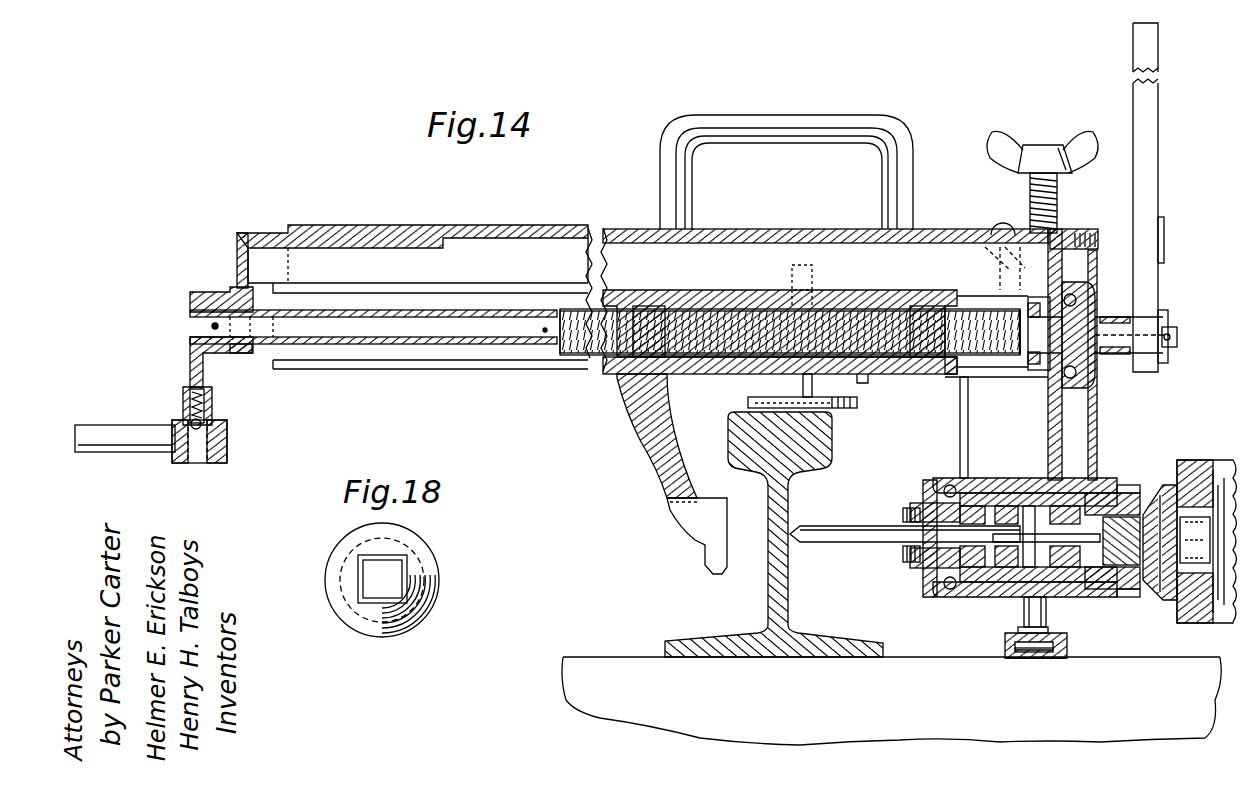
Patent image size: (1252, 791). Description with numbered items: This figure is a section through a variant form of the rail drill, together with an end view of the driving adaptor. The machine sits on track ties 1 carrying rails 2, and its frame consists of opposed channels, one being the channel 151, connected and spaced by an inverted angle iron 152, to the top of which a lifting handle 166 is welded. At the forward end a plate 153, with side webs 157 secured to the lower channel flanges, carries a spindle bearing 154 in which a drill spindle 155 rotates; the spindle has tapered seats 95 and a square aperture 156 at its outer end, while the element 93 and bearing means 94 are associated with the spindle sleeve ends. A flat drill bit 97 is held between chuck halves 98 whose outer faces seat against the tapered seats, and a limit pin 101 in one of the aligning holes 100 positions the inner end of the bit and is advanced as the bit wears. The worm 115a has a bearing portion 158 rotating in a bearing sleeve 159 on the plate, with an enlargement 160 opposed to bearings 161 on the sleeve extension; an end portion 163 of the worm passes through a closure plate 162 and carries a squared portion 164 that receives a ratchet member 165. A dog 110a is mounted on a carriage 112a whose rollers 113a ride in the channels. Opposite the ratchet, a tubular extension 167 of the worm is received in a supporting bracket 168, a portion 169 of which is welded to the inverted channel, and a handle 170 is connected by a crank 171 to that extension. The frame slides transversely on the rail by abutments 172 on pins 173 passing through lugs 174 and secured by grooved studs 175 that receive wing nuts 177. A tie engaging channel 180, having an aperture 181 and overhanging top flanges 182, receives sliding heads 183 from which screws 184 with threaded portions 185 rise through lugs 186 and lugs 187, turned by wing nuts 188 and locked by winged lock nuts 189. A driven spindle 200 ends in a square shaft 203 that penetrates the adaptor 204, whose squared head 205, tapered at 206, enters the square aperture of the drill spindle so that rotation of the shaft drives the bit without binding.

In FIG. 14, the track ties 1 is at (585, 662).
In FIG. 14, the rails 2 is at (833, 450).
In FIG. 14, the end cap 93 is at (945, 595).
In FIG. 14, the bearing means 94 is at (1110, 595).
In FIG. 14, the tapered seats 95 is at (912, 568).
In FIG. 14, the flat drill bit 97 is at (840, 530).
In FIG. 14, the chuck halves 98 is at (905, 553).
In FIG. 14, the aligning holes 100 is at (975, 538).
In FIG. 14, the limit pin 101 is at (1016, 580).
In FIG. 14, the dog 110a is at (650, 462).
In FIG. 14, the carriage 112a is at (716, 374).
In FIG. 14, the rollers 113a is at (938, 290).
In FIG. 14, the worm 115a is at (733, 320).
In FIG. 14, the channel 151 is at (462, 369).
In FIG. 14, the inverted angle iron 152 is at (615, 230).
In FIG. 14, the plate 153 is at (1050, 440).
In FIG. 14, the spindle bearing 154 is at (948, 482).
In FIG. 14, the drill spindle 155 is at (1135, 505).
In FIG. 14, the square aperture 156 is at (1140, 515).
In FIG. 14, the side webs 157 is at (962, 418).
In FIG. 14, the bearing portion 158 is at (1040, 372).
In FIG. 14, the bearing sleeve 159 is at (1035, 300).
In FIG. 14, the enlargement 160 is at (1088, 312).
In FIG. 14, the bearings 161 is at (1075, 295).
In FIG. 14, the closure plate 162 is at (1098, 420).
In FIG. 14, the end portion of the worm 163 is at (1112, 358).
In FIG. 14, the squared portion 164 is at (1177, 338).
In FIG. 14, the ratchet member 165 is at (1148, 118).
In FIG. 14, the lifting handle 166 is at (768, 125).
In FIG. 14, the tubular extension 167 is at (372, 344).
In FIG. 14, the supporting bracket or bearing 168 is at (240, 354).
In FIG. 14, the portion of the bracket 169 is at (258, 230).
In FIG. 14, the handle 170 is at (113, 430).
In FIG. 14, the crank 171 is at (192, 368).
In FIG. 14, the abutments 172 is at (748, 402).
In FIG. 14, the pins 173 is at (803, 385).
In FIG. 14, the lugs 174 is at (828, 300).
In FIG. 14, the studs 175 is at (772, 288).
In FIG. 14, the wing nuts 177 is at (860, 378).
In FIG. 14, the tie engaging channel 180 is at (1008, 645).
In FIG. 14, the aperture 181 is at (1067, 649).
In FIG. 14, the overhanging top flanges 182 is at (1050, 636).
In FIG. 14, the heads 183 is at (1033, 658).
In FIG. 14, the screws 184 is at (1046, 610).
In FIG. 14, the screw threaded portions 185 is at (1030, 185).
In FIG. 14, the lugs 186 is at (1000, 236).
In FIG. 14, the lugs 187 is at (1020, 490).
In FIG. 14, the handles or wing nuts 188 is at (1035, 148).
In FIG. 14, the winged lock nuts 189 is at (1004, 226).
In FIG. 14, the driven spindle 200 is at (1212, 612).
In FIG. 14, the square shaft 203 is at (1195, 530).
In FIG. 14, the adaptor 204 is at (1163, 600).
In FIG. 18, the adaptor 204 is at (412, 540).
In FIG. 14, the squared head 205 is at (1132, 565).
In FIG. 18, the squared head 205 is at (395, 572).
In FIG. 14, the taper 206 is at (1115, 492).
In FIG. 18, the taper 206 is at (386, 605).